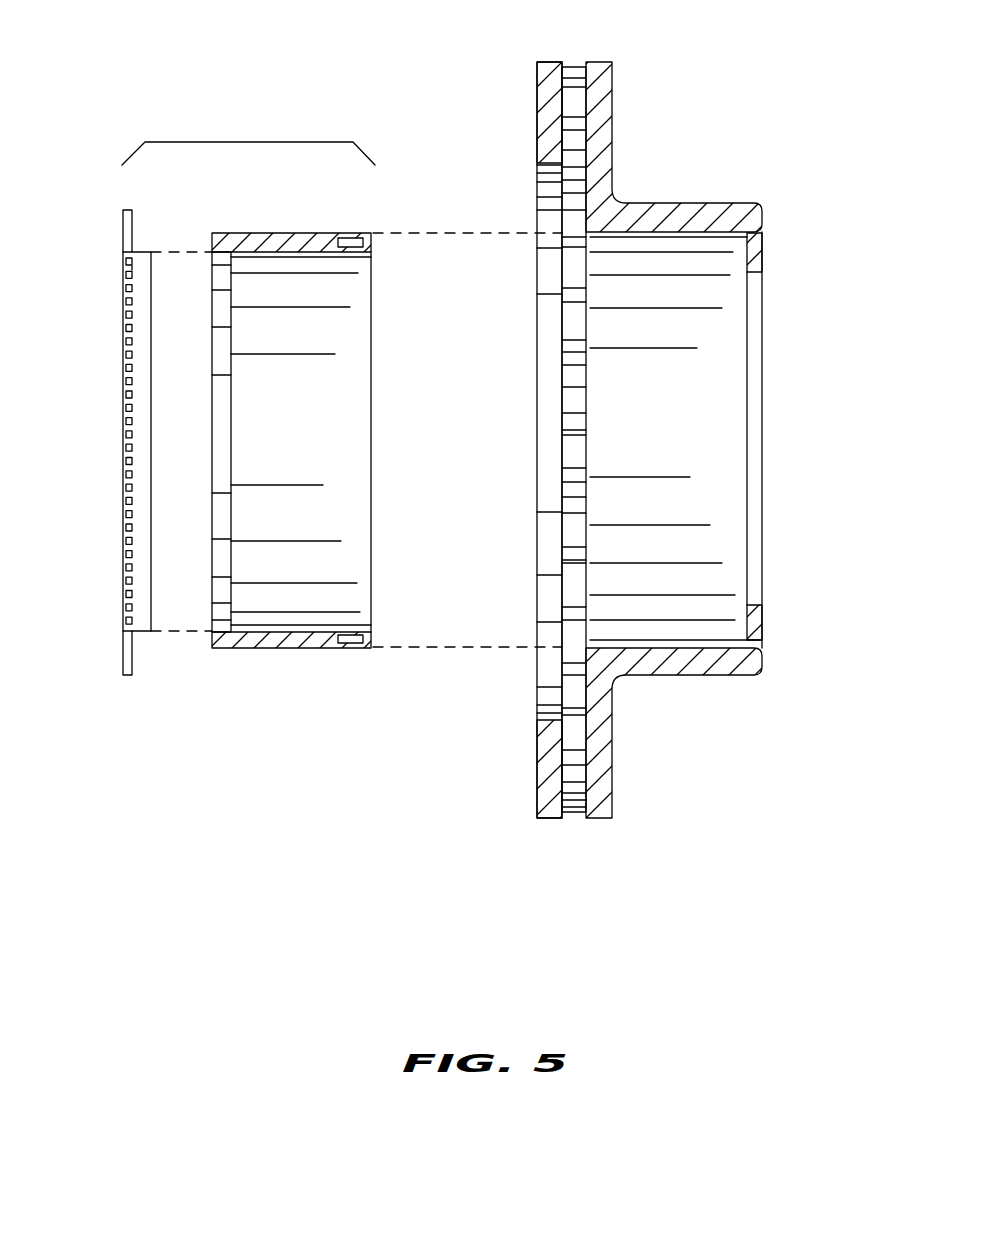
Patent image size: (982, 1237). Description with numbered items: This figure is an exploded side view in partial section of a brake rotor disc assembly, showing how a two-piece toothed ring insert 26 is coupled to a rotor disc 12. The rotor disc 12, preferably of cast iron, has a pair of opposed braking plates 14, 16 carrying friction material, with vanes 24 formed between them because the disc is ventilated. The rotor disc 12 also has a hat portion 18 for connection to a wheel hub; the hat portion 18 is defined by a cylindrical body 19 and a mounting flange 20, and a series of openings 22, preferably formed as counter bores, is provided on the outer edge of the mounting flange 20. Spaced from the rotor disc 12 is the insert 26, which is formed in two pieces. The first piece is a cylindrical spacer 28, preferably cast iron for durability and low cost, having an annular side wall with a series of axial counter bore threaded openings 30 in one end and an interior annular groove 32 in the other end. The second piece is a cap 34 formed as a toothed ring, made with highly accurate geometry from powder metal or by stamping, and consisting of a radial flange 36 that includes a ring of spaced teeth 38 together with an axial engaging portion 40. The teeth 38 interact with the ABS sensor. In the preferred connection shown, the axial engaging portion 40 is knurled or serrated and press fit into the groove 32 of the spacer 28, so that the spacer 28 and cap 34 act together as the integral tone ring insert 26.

The rotor disc 12 is at (651, 409).
The braking plate 14 is at (674, 409).
The braking plate 16 is at (537, 115).
The hat portion 18 is at (693, 203).
The cylindrical body 19 is at (680, 676).
The mounting flange 20 is at (763, 623).
The openings 22 is at (707, 422).
The vanes 24 is at (572, 67).
The toothed ring insert 26 is at (248, 385).
The cylindrical spacer 28 is at (313, 645).
The threaded openings 30 is at (347, 238).
The annular groove 32 is at (213, 240).
The cap 34 is at (142, 632).
The radial flange 36 is at (123, 250).
The teeth 38 is at (126, 318).
The axial engaging portion 40 is at (140, 275).